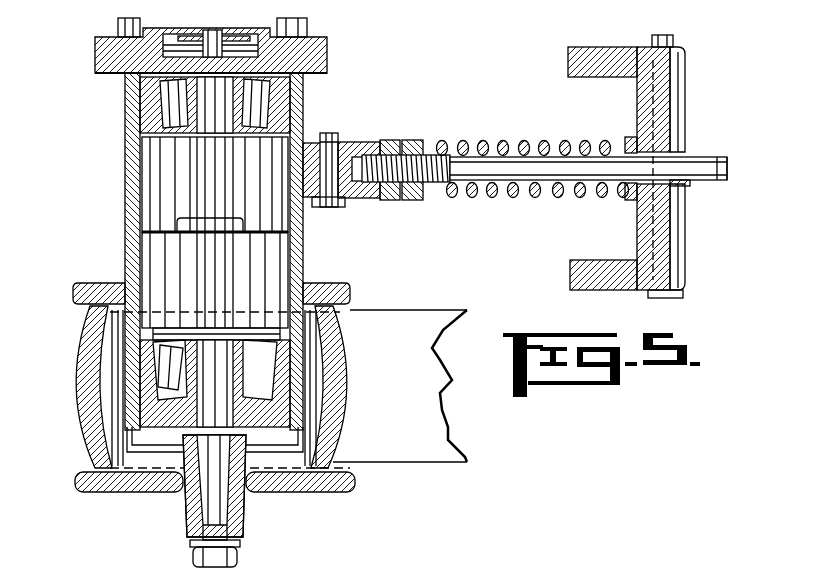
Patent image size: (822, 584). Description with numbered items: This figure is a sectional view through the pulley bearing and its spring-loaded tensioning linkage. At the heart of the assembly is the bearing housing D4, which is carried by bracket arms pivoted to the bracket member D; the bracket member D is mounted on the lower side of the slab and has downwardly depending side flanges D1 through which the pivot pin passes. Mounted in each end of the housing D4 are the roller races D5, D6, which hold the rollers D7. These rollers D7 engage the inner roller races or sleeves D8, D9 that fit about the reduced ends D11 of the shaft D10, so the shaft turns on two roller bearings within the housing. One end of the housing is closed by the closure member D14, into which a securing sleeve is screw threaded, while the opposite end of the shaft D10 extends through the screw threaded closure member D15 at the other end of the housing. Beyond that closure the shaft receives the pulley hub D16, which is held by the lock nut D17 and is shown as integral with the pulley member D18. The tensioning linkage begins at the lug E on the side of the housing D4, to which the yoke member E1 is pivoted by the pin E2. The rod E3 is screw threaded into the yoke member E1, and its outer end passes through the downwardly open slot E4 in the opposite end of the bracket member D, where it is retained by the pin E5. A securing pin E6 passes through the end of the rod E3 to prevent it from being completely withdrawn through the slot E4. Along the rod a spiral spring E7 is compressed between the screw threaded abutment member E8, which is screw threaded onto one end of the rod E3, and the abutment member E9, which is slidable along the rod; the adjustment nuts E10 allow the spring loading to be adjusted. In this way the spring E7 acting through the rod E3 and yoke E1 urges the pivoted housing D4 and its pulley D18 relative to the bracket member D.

The bracket member D is at (657, 102).
The side flanges D1 is at (238, 48).
The bearing housing D4 is at (132, 187).
The roller race D5 is at (188, 103).
The roller race D6 is at (262, 381).
The rollers D7 is at (300, 86).
The inner roller race or sleeve D8 is at (185, 108).
The inner roller race or sleeve D9 is at (325, 412).
The shaft D10 is at (220, 263).
The reduced ends D11 is at (208, 32).
The closure member D14 is at (103, 37).
The screw threaded closure member D15 is at (283, 443).
The pulley hub D16 is at (190, 493).
The lock nut D17 is at (198, 552).
The pulley member D18 is at (343, 432).
The lug E is at (308, 147).
The yoke member E1 is at (362, 143).
The pin E2 is at (325, 200).
The rod E3 is at (585, 163).
The slot E4 is at (680, 182).
The pin E5 is at (673, 41).
The securing pin E6 is at (728, 162).
The spiral spring E7 is at (520, 197).
The screw threaded abutment member E8 is at (407, 203).
The abutment member E9 is at (635, 196).
The adjustment nuts E10 is at (401, 143).